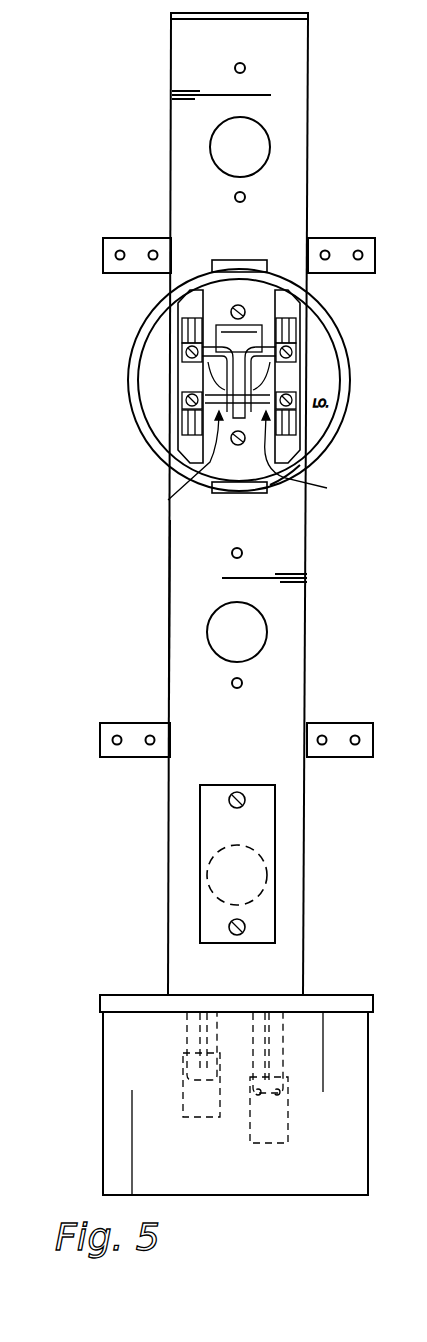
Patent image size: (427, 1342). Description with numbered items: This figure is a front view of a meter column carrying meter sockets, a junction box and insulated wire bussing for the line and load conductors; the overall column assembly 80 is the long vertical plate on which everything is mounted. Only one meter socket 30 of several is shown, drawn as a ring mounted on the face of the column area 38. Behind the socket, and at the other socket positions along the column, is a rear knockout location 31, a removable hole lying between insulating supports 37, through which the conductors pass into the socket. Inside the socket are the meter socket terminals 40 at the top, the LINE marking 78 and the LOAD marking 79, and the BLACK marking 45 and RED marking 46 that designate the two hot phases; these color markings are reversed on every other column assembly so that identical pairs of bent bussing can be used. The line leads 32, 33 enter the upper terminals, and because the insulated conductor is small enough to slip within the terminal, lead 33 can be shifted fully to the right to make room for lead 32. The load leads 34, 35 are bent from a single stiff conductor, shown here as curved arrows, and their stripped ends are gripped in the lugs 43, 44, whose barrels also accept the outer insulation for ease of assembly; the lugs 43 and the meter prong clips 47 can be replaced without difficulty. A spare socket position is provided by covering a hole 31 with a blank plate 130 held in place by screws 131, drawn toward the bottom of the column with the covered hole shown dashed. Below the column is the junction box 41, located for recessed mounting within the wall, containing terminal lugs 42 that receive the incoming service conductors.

The meter socket adapter housing 80 is at (314, 42).
The rear knockout location 31 is at (256, 121).
The meter socket 30 is at (354, 331).
The insulating supports 37 is at (303, 467).
The LINE marking 78 is at (160, 337).
The meter socket terminal 40 is at (303, 343).
The line lead 32 is at (210, 362).
The line lead 33 is at (303, 362).
The lug 43 is at (177, 433).
The meter prong clip 47 is at (176, 431).
The lug 44 is at (300, 420).
The BLACK marking 45 is at (140, 378).
The RED marking 46 is at (338, 377).
The LOAD marking 79 is at (150, 400).
The load lead 34 is at (181, 463).
The load lead 35 is at (310, 456).
The column area 38 is at (190, 532).
The blank plate 130 is at (203, 827).
The screws 131 is at (244, 803).
The junction box 41 is at (103, 1042).
The terminal lugs 42 is at (192, 1117).